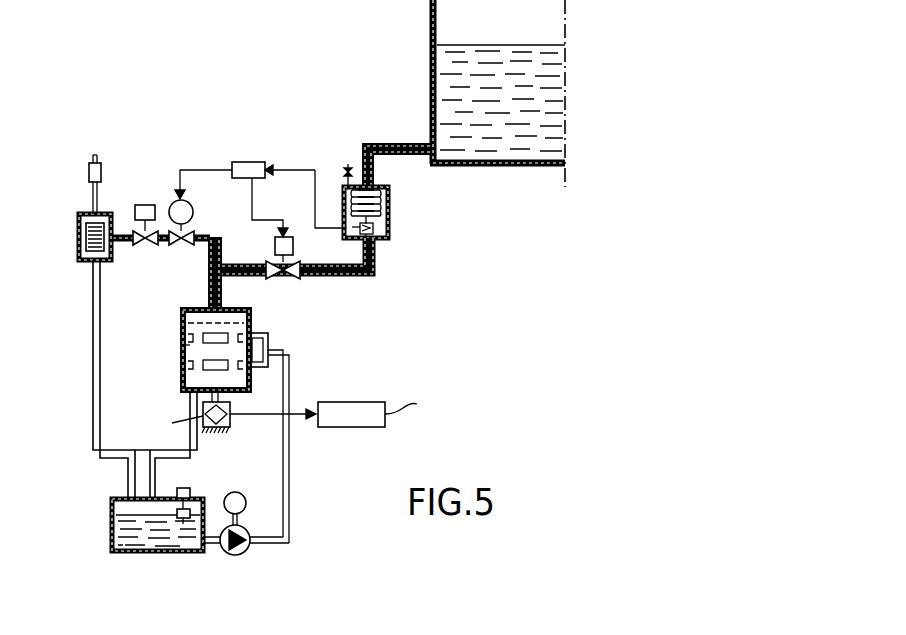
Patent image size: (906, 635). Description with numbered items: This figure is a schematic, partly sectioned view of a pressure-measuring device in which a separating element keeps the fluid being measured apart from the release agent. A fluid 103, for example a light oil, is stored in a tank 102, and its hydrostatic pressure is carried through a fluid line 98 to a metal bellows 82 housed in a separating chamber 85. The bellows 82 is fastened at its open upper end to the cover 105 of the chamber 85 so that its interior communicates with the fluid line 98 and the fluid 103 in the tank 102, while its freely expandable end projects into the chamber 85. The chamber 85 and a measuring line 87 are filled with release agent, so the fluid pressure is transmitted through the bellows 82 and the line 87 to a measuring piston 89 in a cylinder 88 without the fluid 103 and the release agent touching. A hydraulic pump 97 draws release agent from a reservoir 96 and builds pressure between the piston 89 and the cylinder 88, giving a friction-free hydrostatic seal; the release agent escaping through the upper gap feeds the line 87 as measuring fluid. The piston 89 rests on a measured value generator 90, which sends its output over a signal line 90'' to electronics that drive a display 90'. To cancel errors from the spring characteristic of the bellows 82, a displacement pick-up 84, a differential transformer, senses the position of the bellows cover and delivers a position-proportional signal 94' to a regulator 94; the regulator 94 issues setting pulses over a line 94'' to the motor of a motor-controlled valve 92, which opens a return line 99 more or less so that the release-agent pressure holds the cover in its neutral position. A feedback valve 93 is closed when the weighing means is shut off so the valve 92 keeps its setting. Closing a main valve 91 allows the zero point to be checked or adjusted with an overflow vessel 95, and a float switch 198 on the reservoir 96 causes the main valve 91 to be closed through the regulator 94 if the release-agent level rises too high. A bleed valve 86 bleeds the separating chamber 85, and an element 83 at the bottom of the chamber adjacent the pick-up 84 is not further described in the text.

The metal bellows 82 is at (390, 193).
The valve 83 is at (390, 222).
The displacement pick-up 84 is at (374, 228).
The separating chamber 85 is at (342, 208).
The bleed valve 86 is at (348, 165).
The measuring line 87 is at (341, 278).
The cylinder 88 is at (253, 320).
The measuring piston 89 is at (182, 340).
The measured value generator 90 is at (180, 404).
The display 90' is at (415, 390).
The signal line 90'' is at (273, 446).
The main valve 91 is at (275, 245).
The motor controlled valve 92 is at (177, 196).
The feedback valve 93 is at (143, 205).
The regulator 94 is at (250, 146).
The signal 94' is at (304, 171).
The line 94'' is at (203, 157).
The overflow vessel 95 is at (79, 238).
The reservoir 96 is at (112, 530).
The hydraulic pump 97 is at (244, 546).
The fluid line 98 is at (397, 143).
The return line 99 is at (214, 235).
The tank 102 is at (495, 167).
The fluid 103 is at (458, 68).
The cover 105 is at (376, 190).
The float switch 198 is at (188, 490).